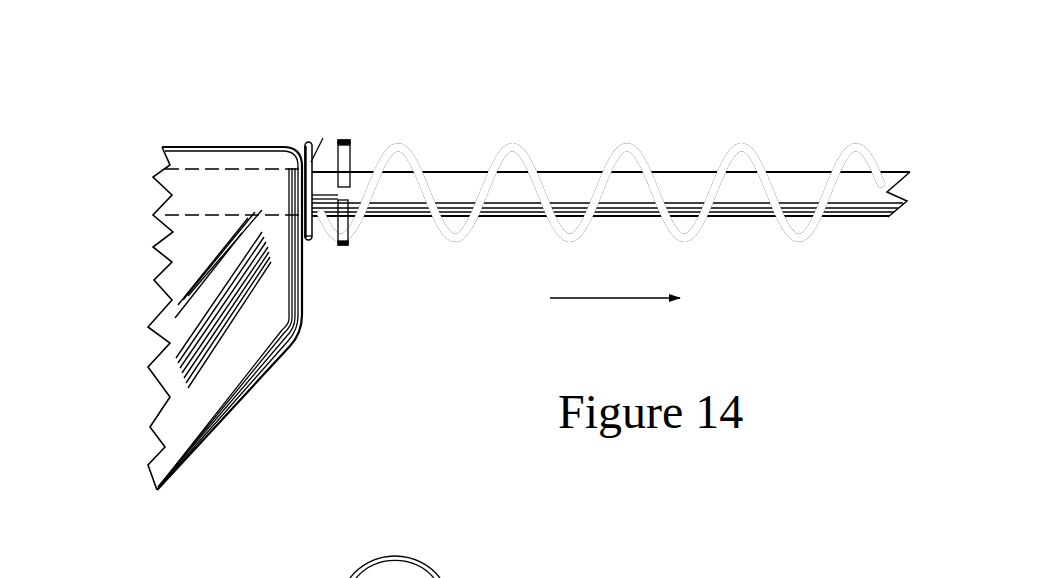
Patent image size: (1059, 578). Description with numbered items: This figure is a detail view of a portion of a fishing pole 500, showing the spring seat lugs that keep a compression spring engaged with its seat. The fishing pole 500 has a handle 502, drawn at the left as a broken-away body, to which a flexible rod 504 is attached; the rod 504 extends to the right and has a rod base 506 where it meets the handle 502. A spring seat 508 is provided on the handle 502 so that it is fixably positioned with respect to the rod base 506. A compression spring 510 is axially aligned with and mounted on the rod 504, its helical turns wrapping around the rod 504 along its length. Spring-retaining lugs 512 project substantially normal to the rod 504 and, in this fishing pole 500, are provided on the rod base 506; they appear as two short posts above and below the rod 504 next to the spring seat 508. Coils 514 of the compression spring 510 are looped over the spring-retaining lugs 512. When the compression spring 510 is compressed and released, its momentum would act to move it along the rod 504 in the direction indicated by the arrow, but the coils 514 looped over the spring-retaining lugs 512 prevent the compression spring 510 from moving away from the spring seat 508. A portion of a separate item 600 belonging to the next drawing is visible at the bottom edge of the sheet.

In FIG. 14, the fishing pole 500 is at (575, 57).
In FIG. 14, the handle 502 is at (153, 390).
In FIG. 14, the flexible rod 504 is at (745, 224).
In FIG. 14, the rod base 506 is at (348, 192).
In FIG. 14, the spring seat 508 is at (323, 138).
In FIG. 14, the compression spring 510 is at (640, 143).
In FIG. 14, the spring-retaining lugs 512 is at (340, 139).
In FIG. 14, the coils 514 is at (341, 299).
In FIG. 15, the bowl assembly 600 is at (788, 577).